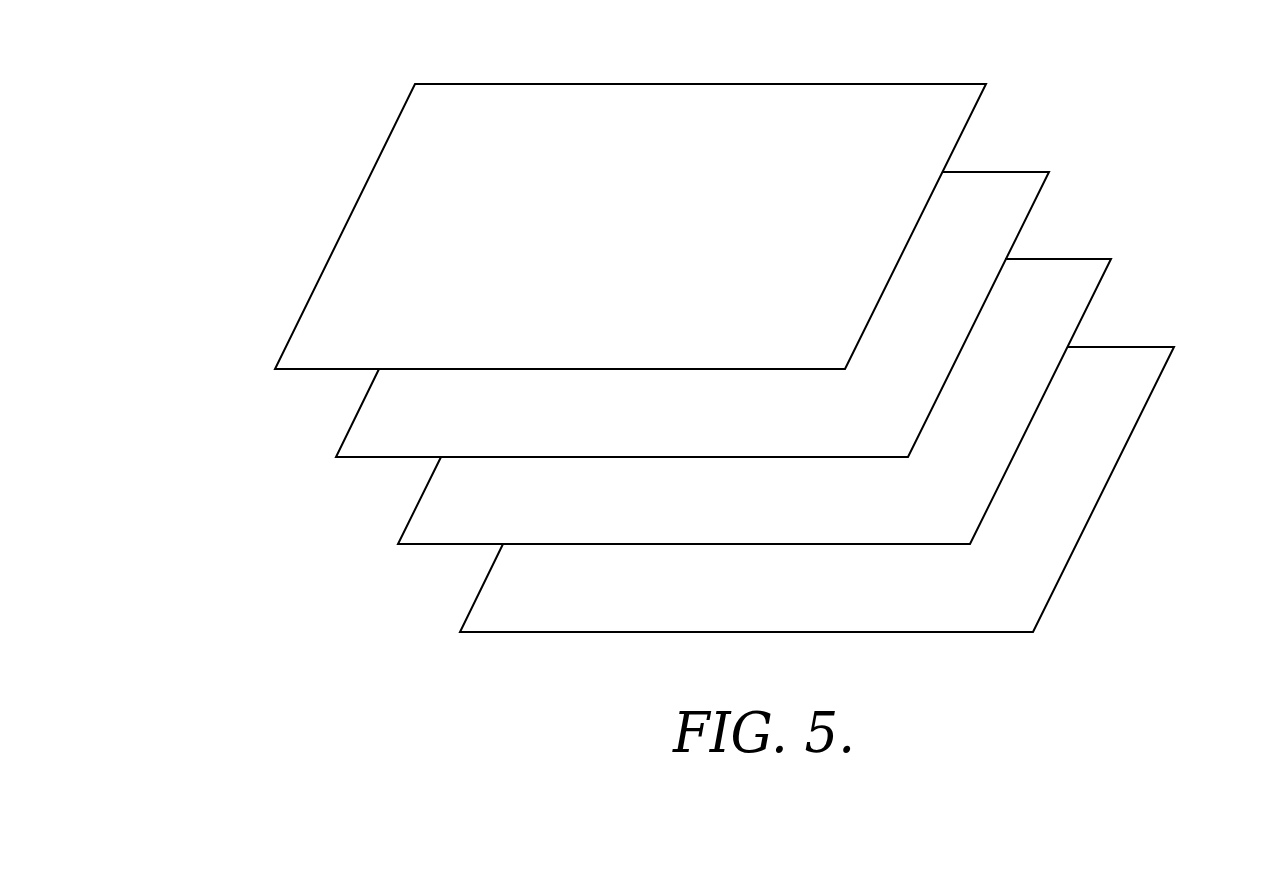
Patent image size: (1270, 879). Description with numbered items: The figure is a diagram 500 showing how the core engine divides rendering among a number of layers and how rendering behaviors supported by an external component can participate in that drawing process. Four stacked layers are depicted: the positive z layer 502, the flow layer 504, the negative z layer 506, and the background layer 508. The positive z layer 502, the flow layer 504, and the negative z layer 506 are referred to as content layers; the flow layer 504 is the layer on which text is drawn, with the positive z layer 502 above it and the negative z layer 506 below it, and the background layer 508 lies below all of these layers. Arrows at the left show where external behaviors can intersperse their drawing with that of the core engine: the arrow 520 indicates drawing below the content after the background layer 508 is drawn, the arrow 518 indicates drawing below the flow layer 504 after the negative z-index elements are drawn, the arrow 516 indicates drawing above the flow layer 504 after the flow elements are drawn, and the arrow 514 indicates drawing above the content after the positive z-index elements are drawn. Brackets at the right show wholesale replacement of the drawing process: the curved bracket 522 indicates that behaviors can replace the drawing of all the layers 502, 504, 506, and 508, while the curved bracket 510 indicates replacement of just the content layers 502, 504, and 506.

The diagram 500 is at (247, 206).
The positive z layer 502 is at (372, 358).
The flow layer 504 is at (434, 445).
The negative z layer 506 is at (497, 535).
The background layer 508 is at (560, 622).
The curved bracket 510 is at (1137, 219).
The arrow 514 is at (246, 346).
The arrow 516 is at (306, 436).
The arrow 518 is at (366, 525).
The arrow 520 is at (421, 608).
The curved bracket 522 is at (1182, 78).